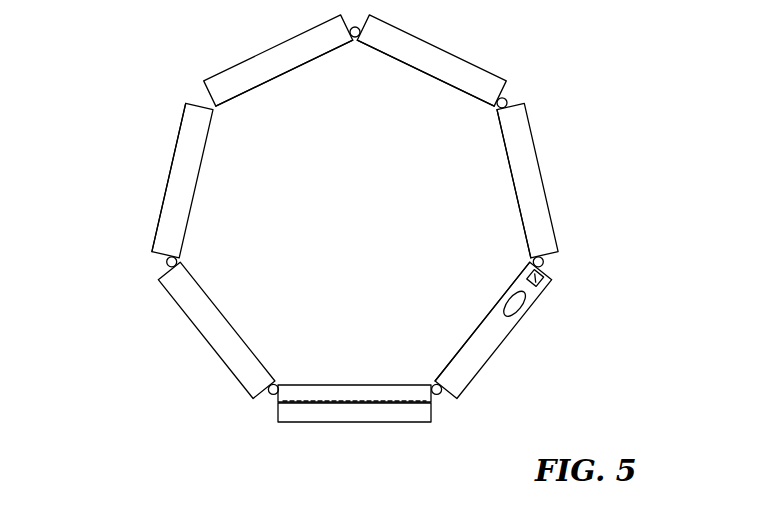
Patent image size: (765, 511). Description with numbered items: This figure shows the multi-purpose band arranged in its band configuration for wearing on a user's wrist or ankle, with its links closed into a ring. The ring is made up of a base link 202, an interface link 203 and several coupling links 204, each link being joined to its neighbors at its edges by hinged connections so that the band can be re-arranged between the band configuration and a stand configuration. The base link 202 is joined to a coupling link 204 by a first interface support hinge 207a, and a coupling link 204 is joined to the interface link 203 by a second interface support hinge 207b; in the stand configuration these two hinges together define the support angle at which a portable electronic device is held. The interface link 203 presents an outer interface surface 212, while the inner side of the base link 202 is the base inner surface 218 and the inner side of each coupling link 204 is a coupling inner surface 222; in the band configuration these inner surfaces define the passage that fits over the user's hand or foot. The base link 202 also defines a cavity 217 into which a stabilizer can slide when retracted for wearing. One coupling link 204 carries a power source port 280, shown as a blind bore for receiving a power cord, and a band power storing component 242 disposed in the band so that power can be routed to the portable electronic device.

The base link 202 is at (387, 387).
The interface link 203 is at (148, 170).
The coupling link 204 is at (409, 207).
The first interface support hinge 207a is at (270, 394).
The second interface support hinge 207b is at (163, 263).
The interface surface 212 is at (165, 188).
The cavity 217 is at (412, 410).
The base inner surface 218 is at (390, 383).
The coupling inner surface 222 is at (392, 58).
The band power storing component 242 is at (522, 318).
The power source port 280 is at (545, 270).